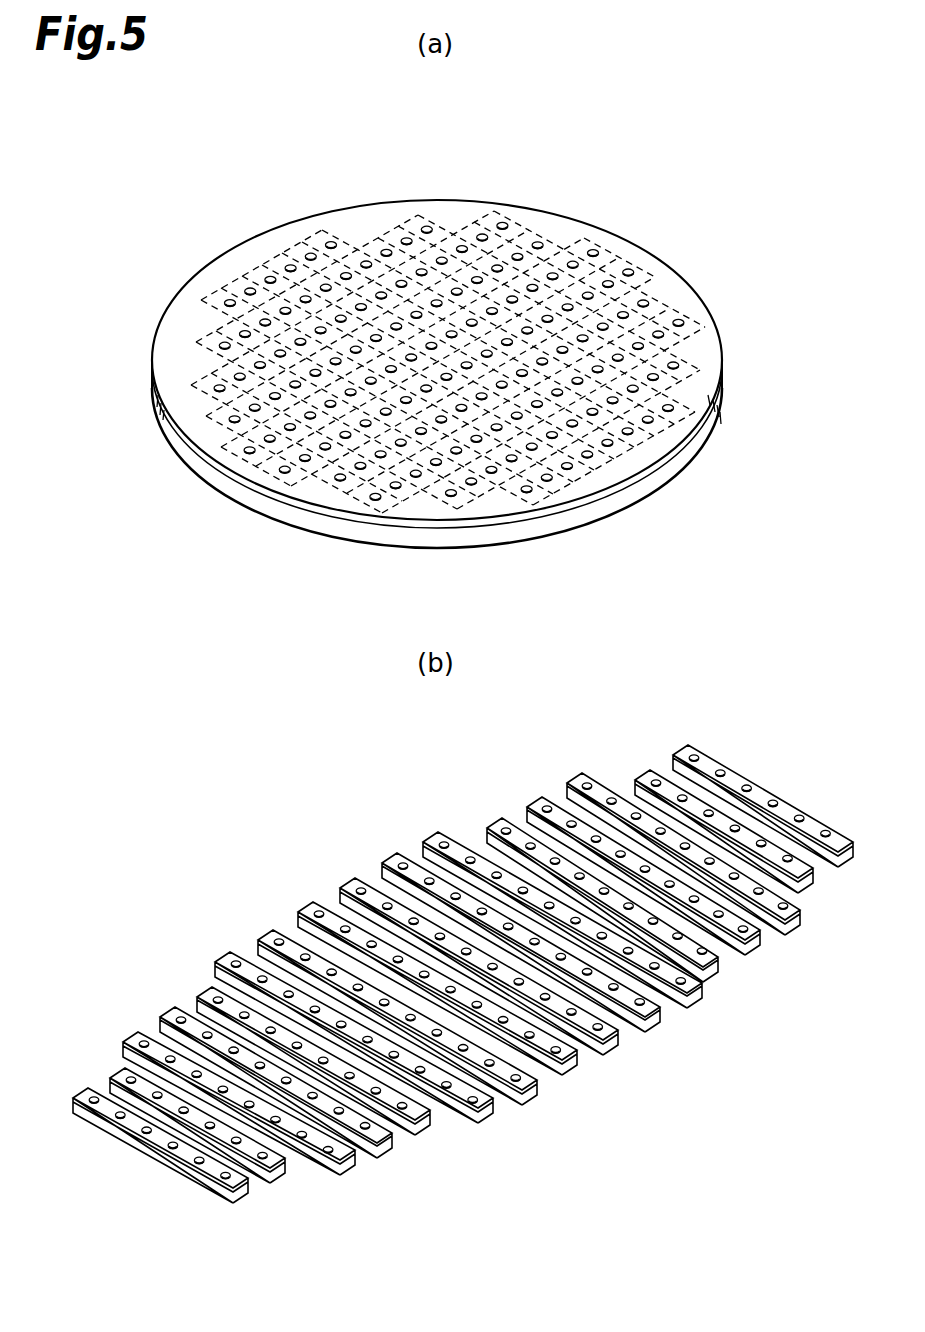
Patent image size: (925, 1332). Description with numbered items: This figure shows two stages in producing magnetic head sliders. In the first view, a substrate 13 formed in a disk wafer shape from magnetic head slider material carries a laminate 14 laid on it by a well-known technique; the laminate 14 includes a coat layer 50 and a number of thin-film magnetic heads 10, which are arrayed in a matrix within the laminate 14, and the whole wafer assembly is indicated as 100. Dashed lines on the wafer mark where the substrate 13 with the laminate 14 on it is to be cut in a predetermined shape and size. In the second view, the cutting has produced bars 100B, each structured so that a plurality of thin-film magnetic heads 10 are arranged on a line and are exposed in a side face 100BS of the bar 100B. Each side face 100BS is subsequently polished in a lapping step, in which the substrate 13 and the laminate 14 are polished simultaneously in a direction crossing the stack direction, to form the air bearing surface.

The light emitting device wafer 100 is at (462, 685).
The coat layer 50 is at (633, 255).
The thin-film magnetic head 10 is at (578, 258).
The laminate 14 is at (713, 410).
The substrate 13 is at (690, 445).
The bar 100B is at (244, 1205).
The side face 100BS is at (90, 1118).